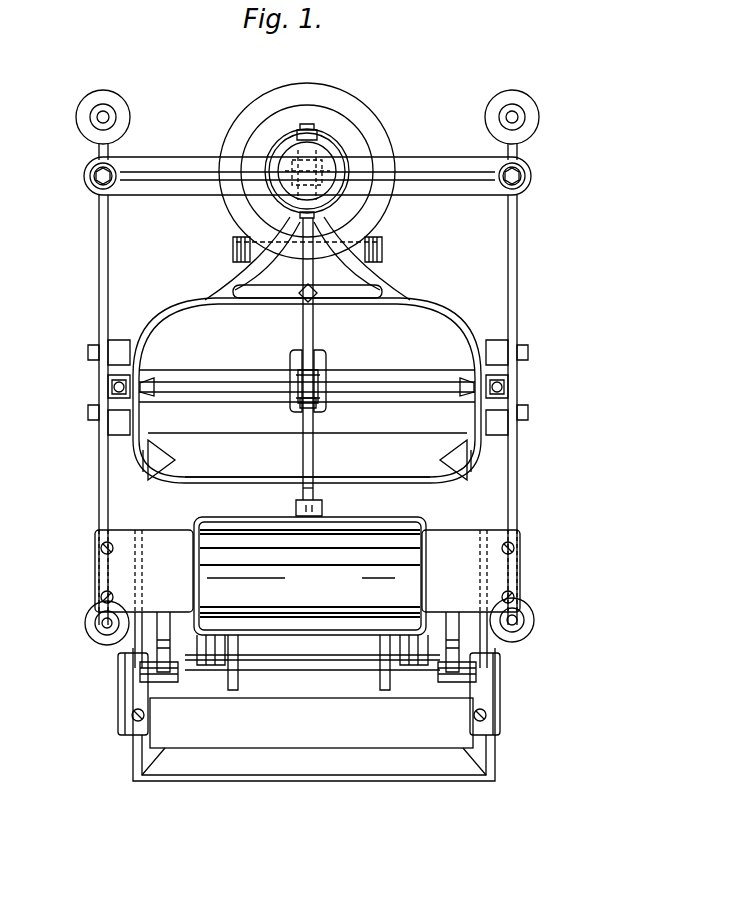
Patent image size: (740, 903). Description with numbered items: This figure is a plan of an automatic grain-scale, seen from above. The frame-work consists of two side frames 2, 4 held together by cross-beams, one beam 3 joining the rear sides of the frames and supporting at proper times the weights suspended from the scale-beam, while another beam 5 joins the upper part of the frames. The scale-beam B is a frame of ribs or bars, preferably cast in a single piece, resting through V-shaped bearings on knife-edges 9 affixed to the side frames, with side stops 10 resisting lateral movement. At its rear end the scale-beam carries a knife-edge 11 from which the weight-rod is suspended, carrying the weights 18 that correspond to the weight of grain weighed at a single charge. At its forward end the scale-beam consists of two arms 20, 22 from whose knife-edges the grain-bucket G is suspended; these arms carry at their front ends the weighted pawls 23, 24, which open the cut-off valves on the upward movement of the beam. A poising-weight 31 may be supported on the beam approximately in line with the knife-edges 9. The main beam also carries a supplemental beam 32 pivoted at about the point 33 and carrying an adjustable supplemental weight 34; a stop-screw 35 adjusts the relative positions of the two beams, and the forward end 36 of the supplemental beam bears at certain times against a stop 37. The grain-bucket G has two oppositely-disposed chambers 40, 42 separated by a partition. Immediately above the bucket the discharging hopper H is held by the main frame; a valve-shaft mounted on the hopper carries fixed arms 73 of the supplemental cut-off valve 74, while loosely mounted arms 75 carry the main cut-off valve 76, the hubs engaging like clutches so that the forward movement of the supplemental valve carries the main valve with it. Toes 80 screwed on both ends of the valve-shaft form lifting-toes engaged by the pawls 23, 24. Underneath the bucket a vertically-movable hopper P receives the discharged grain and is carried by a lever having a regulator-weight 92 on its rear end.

The side frame 2 is at (517, 297).
The beam 3 is at (418, 168).
The side frame 4 is at (99, 320).
The beam 5 is at (372, 376).
The knife-edges 9 is at (150, 384).
The side stops 10 is at (128, 365).
The knife-edge 11 is at (322, 178).
The weights 18 is at (338, 134).
The arm 20 is at (480, 625).
The arm 22 is at (140, 622).
The weighted pawl 23 is at (462, 678).
The weighted pawl 24 is at (170, 678).
The poising-weight 31 is at (326, 356).
The supplemental beam 32 is at (303, 328).
The pivot point 33 is at (326, 402).
The supplemental weight 34 is at (272, 165).
The stop-screw 35 is at (316, 297).
The forward end 36 is at (303, 496).
The stop 37 is at (322, 508).
The chamber 40 is at (335, 692).
The chamber 42 is at (205, 500).
The arms 73 is at (235, 688).
The supplemental cut-off valve 74 is at (287, 662).
The arms 75 is at (212, 662).
The main cut-off valve 76 is at (312, 660).
The toes 80 is at (166, 620).
The regulator-weight 92 is at (383, 252).
The scale-beam B is at (445, 306).
The grain-bucket G is at (385, 742).
The discharging hopper H is at (310, 576).
The hopper P is at (290, 762).